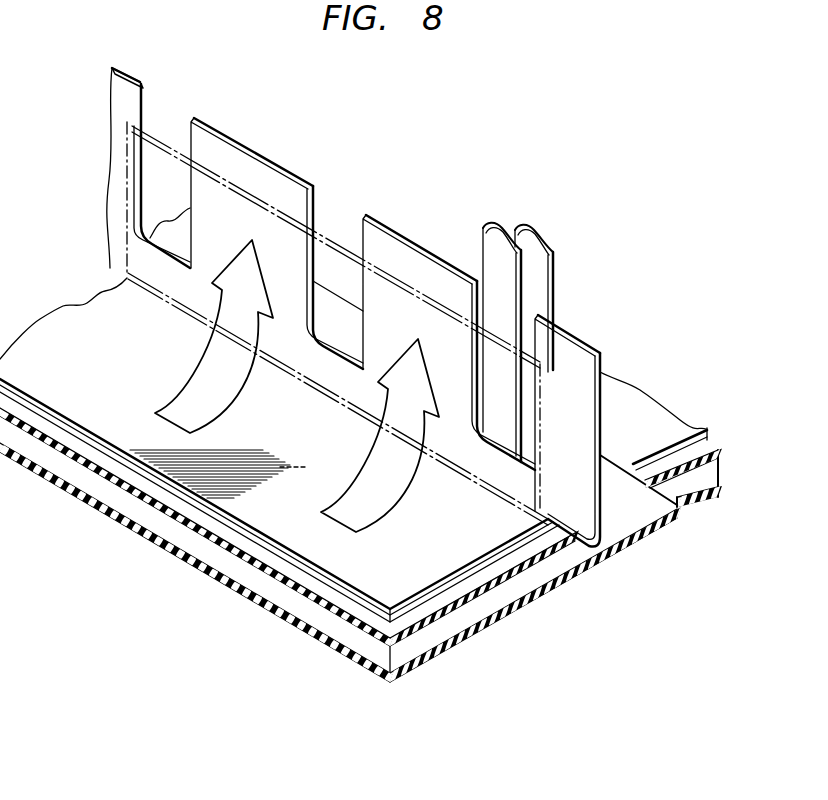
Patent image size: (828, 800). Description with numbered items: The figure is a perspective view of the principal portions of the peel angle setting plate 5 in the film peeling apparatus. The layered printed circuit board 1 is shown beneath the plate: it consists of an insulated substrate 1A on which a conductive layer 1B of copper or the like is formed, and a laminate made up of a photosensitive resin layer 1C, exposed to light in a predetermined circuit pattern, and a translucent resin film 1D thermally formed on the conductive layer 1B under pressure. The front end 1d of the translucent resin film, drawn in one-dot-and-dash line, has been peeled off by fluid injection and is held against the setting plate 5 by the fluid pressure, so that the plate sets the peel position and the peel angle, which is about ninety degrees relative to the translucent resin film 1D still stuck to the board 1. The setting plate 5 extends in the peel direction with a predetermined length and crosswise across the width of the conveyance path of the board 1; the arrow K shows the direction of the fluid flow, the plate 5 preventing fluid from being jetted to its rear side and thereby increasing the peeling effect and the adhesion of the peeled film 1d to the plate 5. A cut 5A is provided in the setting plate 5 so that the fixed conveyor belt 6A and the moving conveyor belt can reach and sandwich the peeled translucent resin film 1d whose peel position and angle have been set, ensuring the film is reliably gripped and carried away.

The board 1 is at (172, 536).
The insulated substrate 1A is at (127, 506).
The conductive layer 1B is at (278, 608).
The photosensitive resin layer 1C is at (457, 600).
The translucent resin film 1D is at (485, 568).
The front end of the translucent resin film 1d is at (177, 178).
The peel angle setting plate 5 is at (261, 150).
The cut 5A is at (180, 243).
The fixed conveyor belt 6A is at (489, 246).
The arrow indicating direction of fluid flow K is at (297, 386).